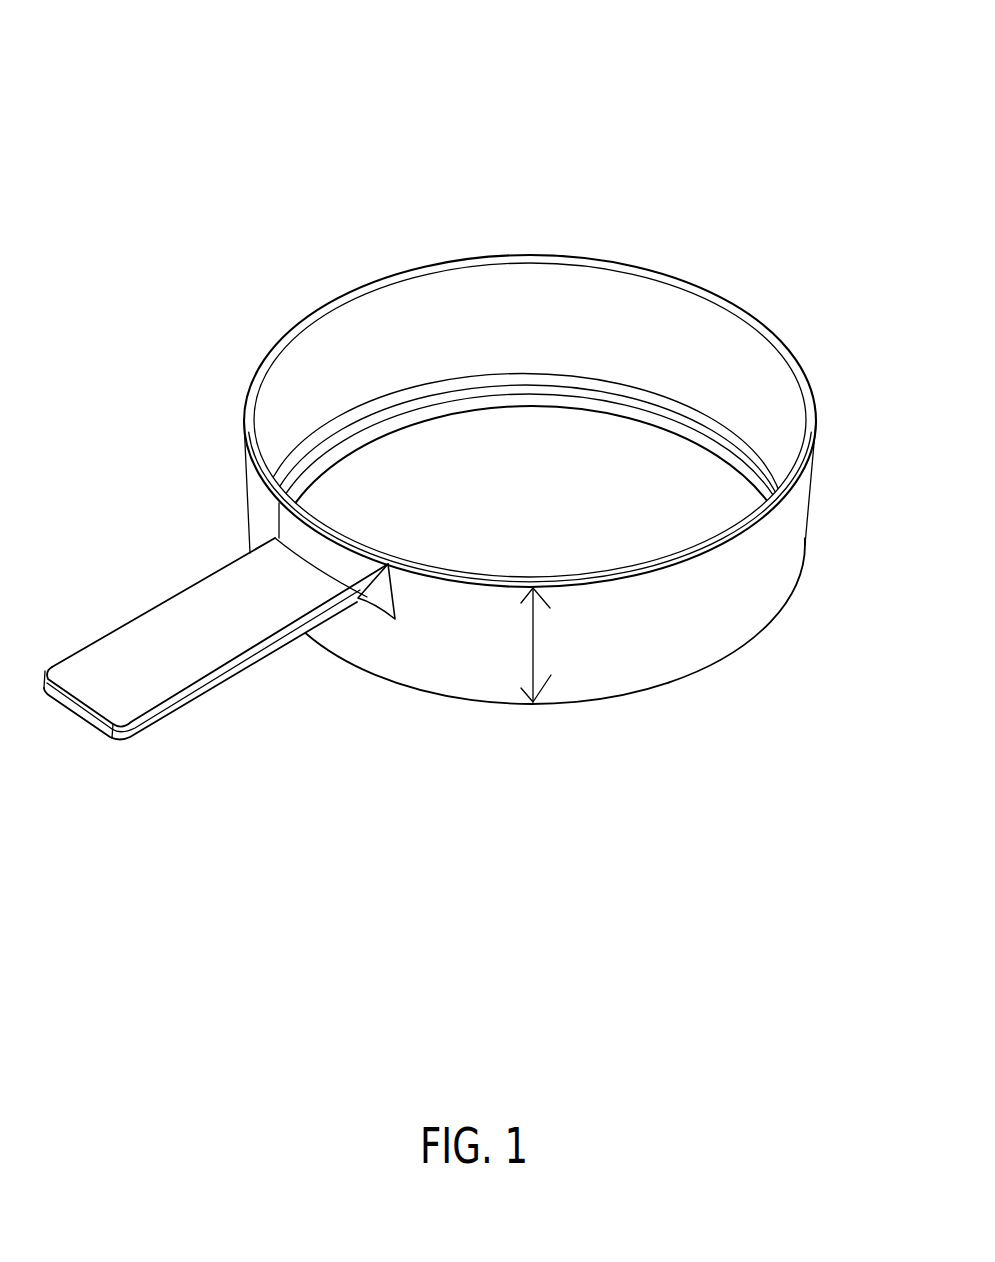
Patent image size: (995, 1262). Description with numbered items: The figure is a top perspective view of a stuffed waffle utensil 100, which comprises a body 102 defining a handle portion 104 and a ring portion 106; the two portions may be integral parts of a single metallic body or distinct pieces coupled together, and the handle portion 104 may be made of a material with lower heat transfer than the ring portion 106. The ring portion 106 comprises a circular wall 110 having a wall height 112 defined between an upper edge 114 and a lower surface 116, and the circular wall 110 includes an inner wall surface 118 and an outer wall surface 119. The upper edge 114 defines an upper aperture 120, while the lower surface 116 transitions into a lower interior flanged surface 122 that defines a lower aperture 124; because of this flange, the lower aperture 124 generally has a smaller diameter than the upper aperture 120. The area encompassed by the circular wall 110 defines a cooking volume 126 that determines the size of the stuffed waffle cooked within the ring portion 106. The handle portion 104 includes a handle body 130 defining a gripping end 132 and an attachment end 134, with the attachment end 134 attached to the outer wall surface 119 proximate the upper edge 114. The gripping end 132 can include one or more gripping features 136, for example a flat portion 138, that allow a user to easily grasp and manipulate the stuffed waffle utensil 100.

The stuffed waffle utensil 100 is at (725, 126).
The body 102 is at (413, 657).
The handle portion 104 is at (173, 718).
The ring portion 106 is at (813, 522).
The circular wall 110 is at (653, 272).
The wall height 112 is at (537, 647).
The upper edge 114 is at (342, 287).
The lower surface 116 is at (678, 437).
The inner wall surface 118 is at (767, 392).
The outer wall surface 119 is at (757, 602).
The upper aperture 120 is at (538, 270).
The lower interior flanged surface 122 is at (485, 402).
The lower aperture 124 is at (643, 530).
The cooking volume 126 is at (600, 443).
The handle body 130 is at (158, 610).
The gripping end 132 is at (88, 722).
The attachment end 134 is at (363, 598).
The gripping feature 136 is at (203, 660).
The flat portion 138 is at (100, 670).